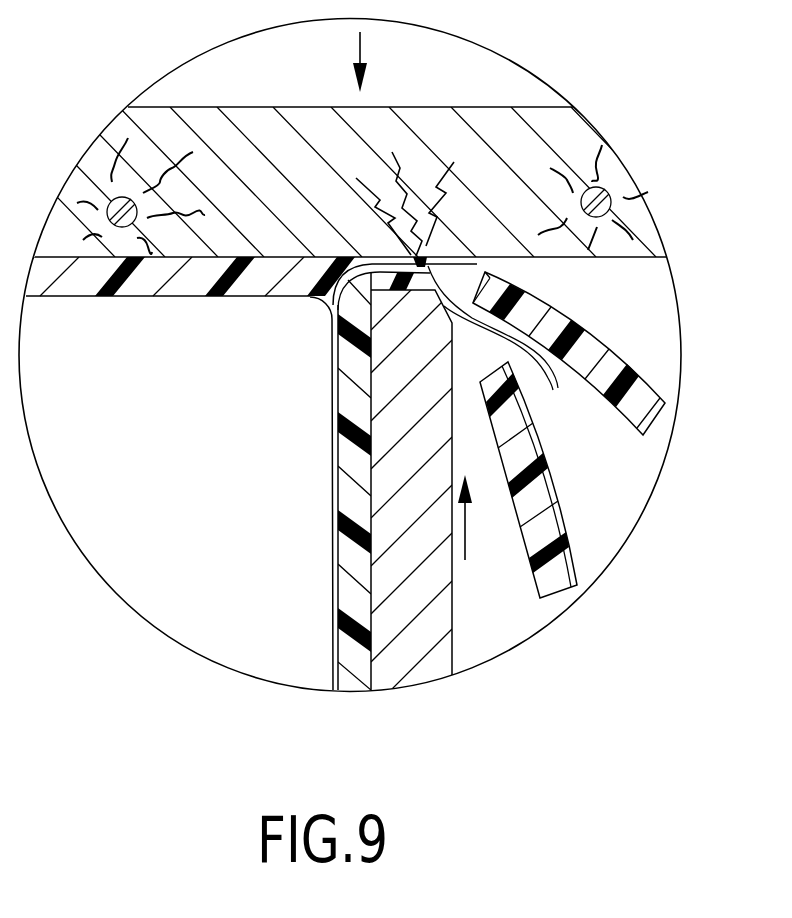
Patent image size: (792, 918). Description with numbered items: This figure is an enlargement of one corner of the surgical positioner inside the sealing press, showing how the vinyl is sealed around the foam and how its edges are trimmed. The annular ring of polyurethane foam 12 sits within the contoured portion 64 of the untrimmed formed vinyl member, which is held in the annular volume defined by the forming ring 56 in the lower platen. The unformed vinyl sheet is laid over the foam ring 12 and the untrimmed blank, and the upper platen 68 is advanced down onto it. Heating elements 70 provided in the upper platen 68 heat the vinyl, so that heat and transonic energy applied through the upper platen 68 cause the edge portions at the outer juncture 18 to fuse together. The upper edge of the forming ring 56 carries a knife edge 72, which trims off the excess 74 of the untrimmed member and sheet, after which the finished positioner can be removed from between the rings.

The annular ring of polyurethane foam 12 is at (198, 458).
The outer juncture 18 is at (477, 264).
The forming ring 56 is at (435, 618).
The contoured portion 64 is at (350, 668).
The upper platen 68 is at (553, 127).
The heating elements 70 is at (117, 200).
The knife edge 72 is at (505, 343).
The excess 74 is at (657, 413).